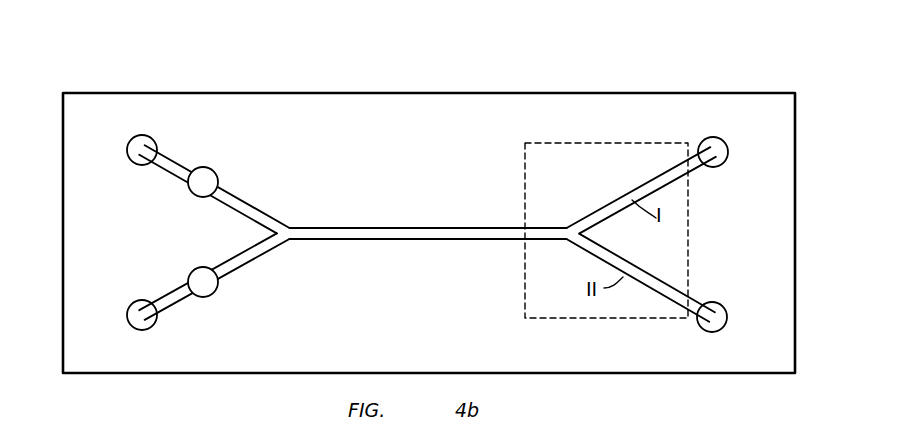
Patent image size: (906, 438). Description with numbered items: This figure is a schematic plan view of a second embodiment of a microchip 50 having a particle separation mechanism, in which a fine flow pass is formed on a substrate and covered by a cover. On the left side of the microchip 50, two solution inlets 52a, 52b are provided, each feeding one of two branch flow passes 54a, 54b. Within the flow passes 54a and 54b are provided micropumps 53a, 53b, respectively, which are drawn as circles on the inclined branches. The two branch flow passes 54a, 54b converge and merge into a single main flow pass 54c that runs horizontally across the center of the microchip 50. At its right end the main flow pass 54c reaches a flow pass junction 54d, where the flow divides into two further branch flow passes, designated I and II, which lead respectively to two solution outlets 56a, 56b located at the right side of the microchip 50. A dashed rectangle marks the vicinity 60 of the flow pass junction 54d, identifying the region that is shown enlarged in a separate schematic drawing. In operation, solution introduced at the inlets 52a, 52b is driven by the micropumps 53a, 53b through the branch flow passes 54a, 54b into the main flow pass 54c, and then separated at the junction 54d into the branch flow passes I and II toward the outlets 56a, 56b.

The microchip 50 is at (549, 70).
The solution inlet 52a is at (132, 163).
The solution inlet 52b is at (133, 302).
The micropump 53a is at (214, 169).
The micropump 53b is at (221, 290).
The branch flow pass 54a is at (167, 173).
The branch flow pass 54b is at (175, 302).
The main flow pass 54c is at (432, 227).
The flow pass junction 54d is at (566, 226).
The solution outlet 56a is at (716, 168).
The solution outlet 56b is at (718, 302).
The vicinity of the flow pass junction 60 is at (525, 278).